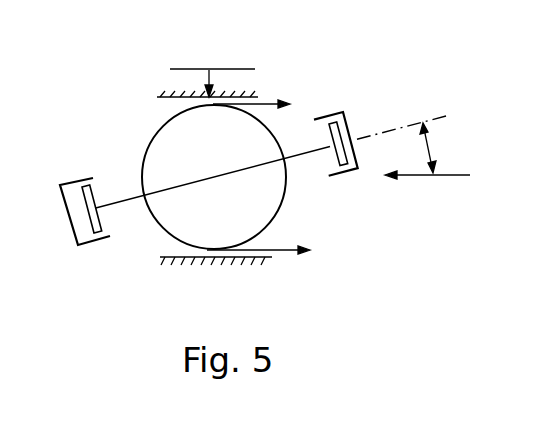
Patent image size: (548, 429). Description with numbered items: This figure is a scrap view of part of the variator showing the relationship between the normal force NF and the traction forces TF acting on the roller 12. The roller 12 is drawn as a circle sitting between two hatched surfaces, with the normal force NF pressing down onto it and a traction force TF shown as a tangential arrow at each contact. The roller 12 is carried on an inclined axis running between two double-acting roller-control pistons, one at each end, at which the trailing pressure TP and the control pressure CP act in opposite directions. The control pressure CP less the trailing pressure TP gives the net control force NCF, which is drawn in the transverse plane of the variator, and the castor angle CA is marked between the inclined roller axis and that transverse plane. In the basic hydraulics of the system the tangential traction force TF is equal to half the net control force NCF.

The roller / drum 12 is at (165, 152).
The trailing pressure TP is at (71, 190).
The control pressure CP is at (353, 162).
The normal force NF is at (207, 64).
The traction force TF is at (250, 176).
The castor angle CA is at (434, 141).
The net control force NCF is at (443, 176).